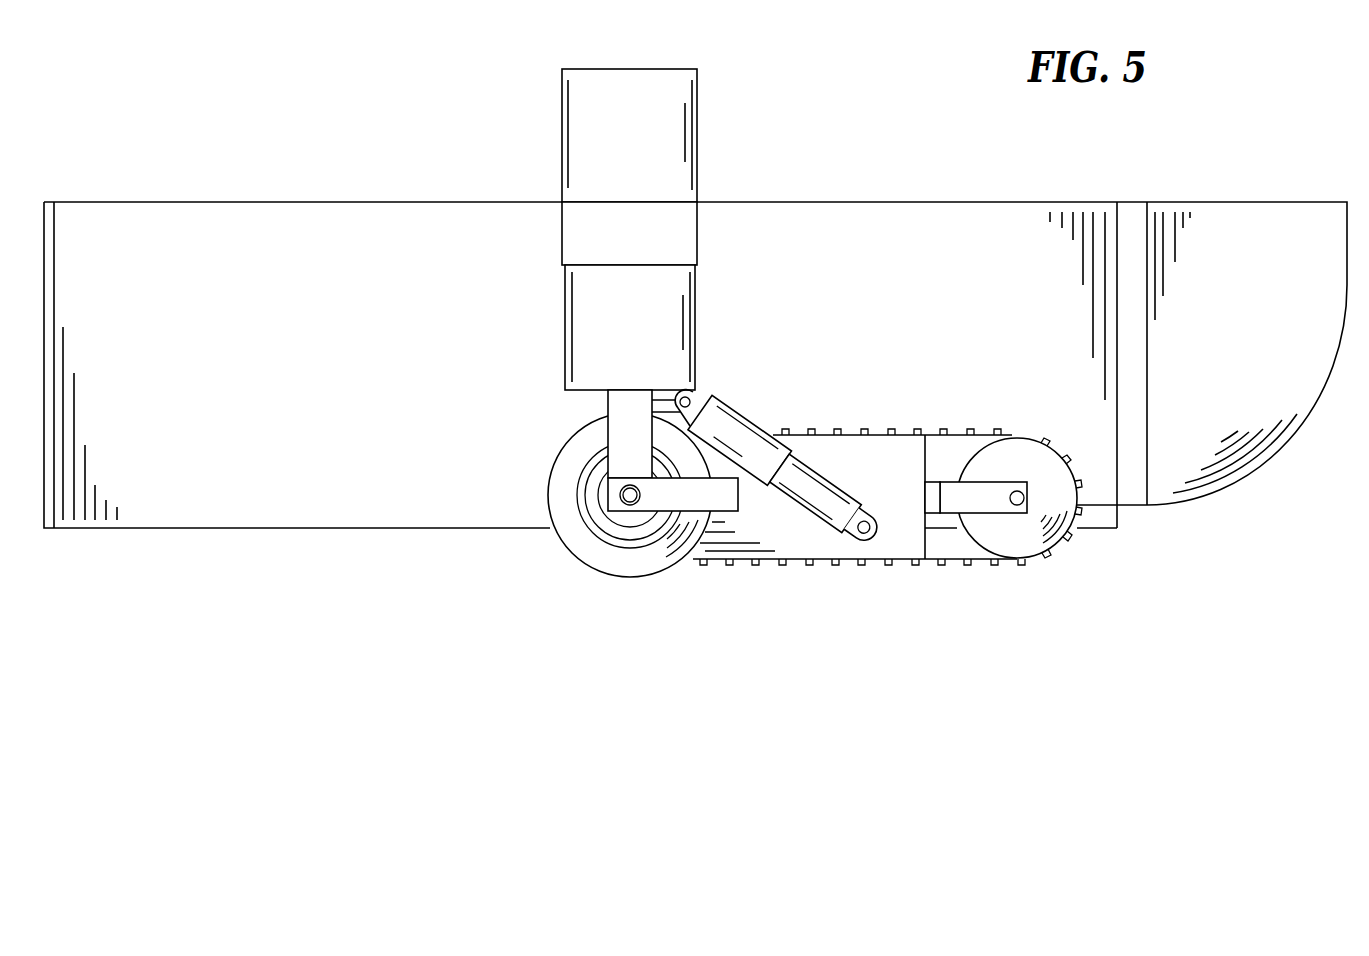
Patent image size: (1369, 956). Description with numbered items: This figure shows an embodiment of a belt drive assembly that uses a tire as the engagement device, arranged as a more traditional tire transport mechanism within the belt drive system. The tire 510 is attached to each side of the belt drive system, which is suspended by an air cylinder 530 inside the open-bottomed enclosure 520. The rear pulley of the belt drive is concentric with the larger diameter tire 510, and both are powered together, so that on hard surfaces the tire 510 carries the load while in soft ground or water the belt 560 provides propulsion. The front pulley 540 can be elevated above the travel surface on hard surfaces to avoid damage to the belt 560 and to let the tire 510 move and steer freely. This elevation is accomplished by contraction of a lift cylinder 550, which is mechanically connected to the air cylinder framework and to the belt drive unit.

The tire 510 is at (578, 548).
The open-bottomed enclosure 520 is at (261, 252).
The air cylinder 530 is at (668, 243).
The front pulley 540 is at (1022, 535).
The lift cylinder 550 is at (840, 533).
The belt 560 is at (917, 563).